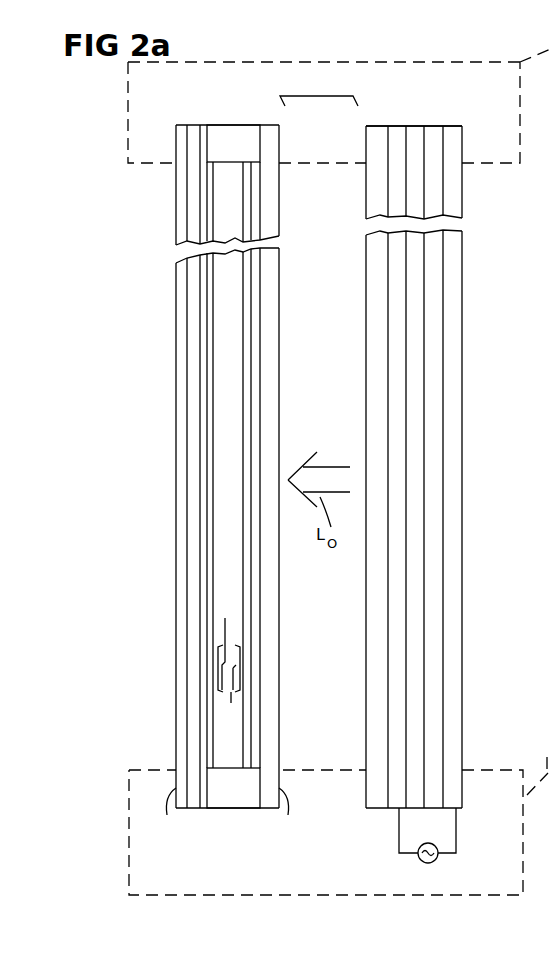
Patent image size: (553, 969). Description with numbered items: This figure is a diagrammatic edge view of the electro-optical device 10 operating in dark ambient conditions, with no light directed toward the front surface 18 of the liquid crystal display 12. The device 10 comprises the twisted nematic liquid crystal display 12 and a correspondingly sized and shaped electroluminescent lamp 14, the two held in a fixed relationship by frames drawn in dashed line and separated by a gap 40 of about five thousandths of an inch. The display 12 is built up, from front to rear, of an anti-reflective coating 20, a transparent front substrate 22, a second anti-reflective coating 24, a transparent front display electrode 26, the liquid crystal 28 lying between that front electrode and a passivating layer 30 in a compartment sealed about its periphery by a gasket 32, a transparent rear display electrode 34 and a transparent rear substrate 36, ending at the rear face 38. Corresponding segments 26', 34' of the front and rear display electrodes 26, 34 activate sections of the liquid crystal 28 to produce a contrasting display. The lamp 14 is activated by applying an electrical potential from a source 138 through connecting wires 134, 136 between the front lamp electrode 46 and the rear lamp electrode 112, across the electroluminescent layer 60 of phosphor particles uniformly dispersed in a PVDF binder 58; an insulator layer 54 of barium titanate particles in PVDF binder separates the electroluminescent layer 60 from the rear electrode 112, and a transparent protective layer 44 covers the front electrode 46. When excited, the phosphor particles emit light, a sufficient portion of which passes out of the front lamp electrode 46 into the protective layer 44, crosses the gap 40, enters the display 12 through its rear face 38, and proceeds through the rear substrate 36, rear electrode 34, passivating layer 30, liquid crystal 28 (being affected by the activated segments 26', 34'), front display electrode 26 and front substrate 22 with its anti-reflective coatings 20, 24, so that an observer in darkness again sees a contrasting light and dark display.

The electro-optical device 10 is at (318, 840).
The liquid crystal display 12 is at (204, 483).
The electroluminescent lamp 14 is at (438, 452).
The front surface 18 is at (168, 815).
The anti-reflective coating 20 is at (182, 177).
The transparent front substrate 22 is at (192, 195).
The anti-reflective coating 24 is at (200, 218).
The transparent front display electrode 26 is at (226, 465).
The segment of front display electrode 26' is at (231, 646).
The liquid crystal 28 is at (238, 332).
The passivating layer 30 is at (246, 348).
The gasket 32 is at (243, 151).
The transparent rear display electrode 34 is at (286, 465).
The segment of rear display electrode 34' is at (230, 685).
The transparent rear substrate 36 is at (271, 307).
The rear face 38 is at (286, 815).
The gap 40 is at (323, 93).
The transparent protective layer 44 is at (373, 336).
The front lamp electrode 46 is at (397, 580).
The insulator layer 54 is at (433, 289).
The PVDF binder 58 is at (418, 732).
The electroluminescent layer 60 is at (413, 128).
The rear lamp electrode 112 is at (455, 366).
The connecting wire 134 is at (399, 833).
The connecting wire 136 is at (456, 833).
The source 138 is at (434, 861).